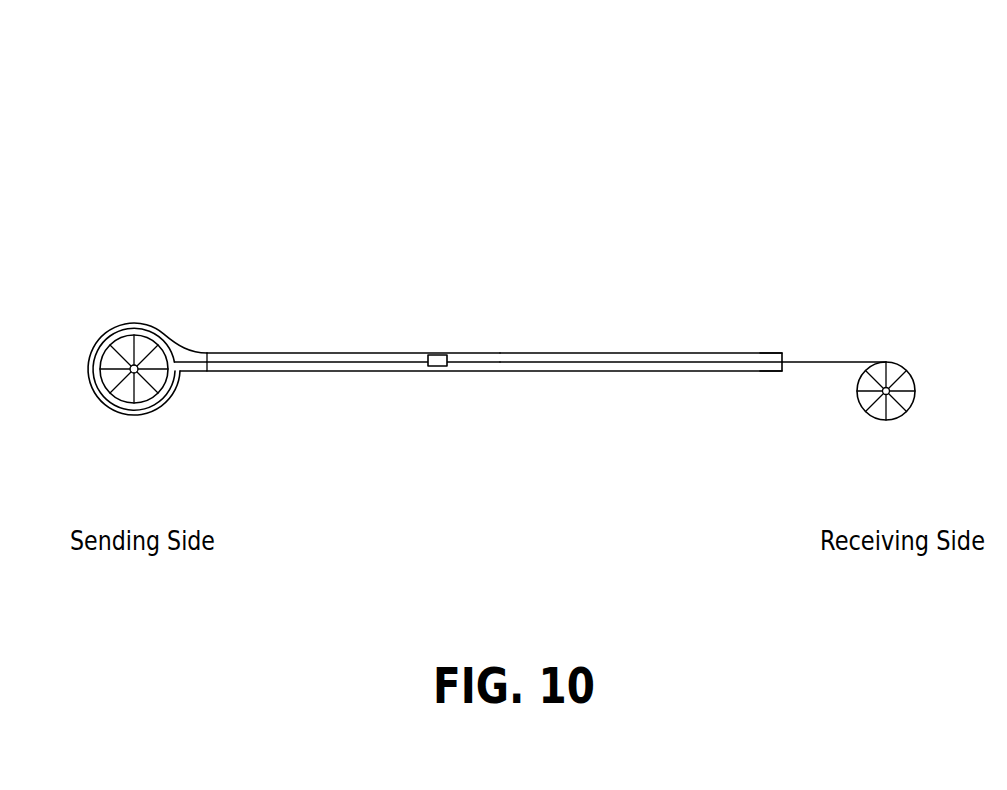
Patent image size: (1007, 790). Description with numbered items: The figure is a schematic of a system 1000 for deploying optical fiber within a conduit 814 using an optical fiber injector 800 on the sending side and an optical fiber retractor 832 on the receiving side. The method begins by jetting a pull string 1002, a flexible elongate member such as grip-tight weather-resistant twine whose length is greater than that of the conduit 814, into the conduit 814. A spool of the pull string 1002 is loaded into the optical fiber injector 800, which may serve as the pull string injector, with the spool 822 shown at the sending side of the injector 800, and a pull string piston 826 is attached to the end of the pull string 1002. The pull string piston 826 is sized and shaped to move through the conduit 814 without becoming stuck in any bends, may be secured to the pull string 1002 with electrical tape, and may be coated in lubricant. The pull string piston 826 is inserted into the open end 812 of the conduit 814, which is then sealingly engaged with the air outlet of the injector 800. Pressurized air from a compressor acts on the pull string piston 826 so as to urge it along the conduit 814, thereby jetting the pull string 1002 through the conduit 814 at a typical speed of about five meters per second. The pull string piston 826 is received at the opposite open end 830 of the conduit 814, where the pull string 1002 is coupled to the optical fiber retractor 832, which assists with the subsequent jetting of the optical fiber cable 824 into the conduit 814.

The system 1000 is at (608, 110).
The optical fiber injector 800 is at (107, 324).
The open end 812 is at (208, 355).
The sending side wheel 822 is at (148, 403).
The optical fiber cable 824 is at (306, 361).
The pull string piston 826 is at (437, 356).
The pull string 1002 is at (643, 360).
The opposite open end 830 is at (784, 355).
The conduit 814 is at (658, 375).
The optical fiber retractor 832 is at (904, 366).